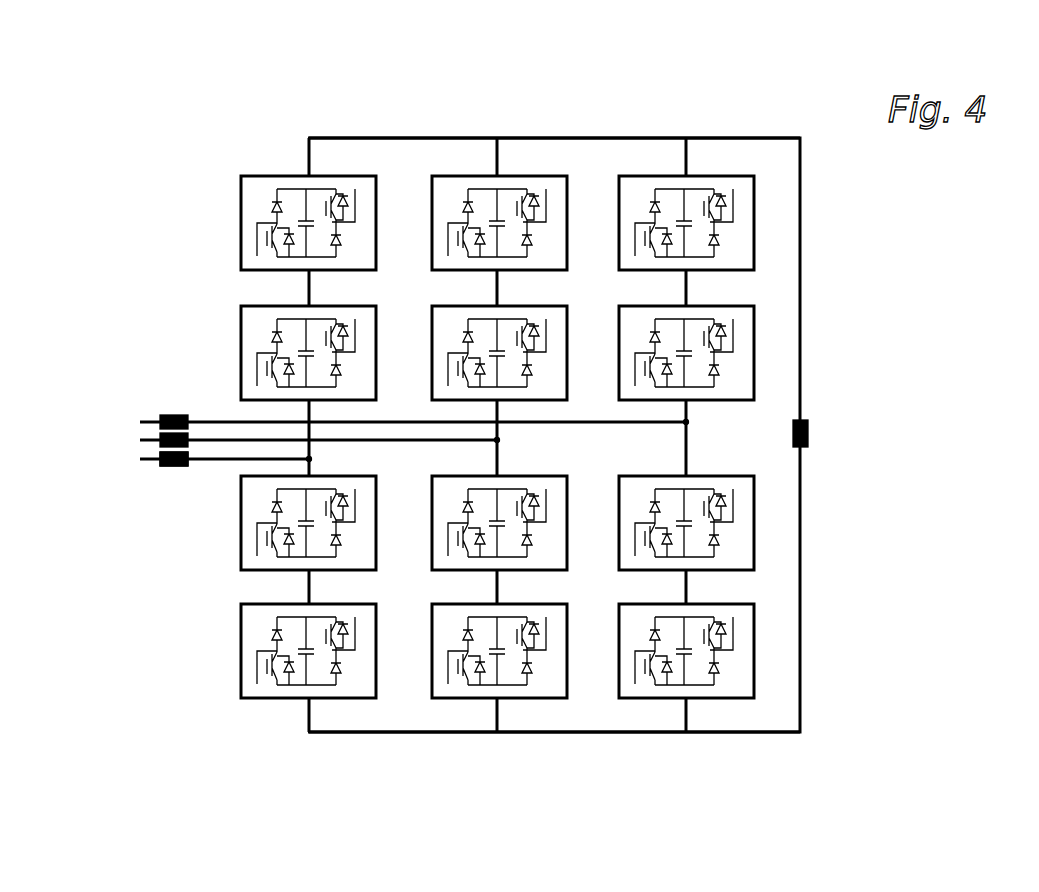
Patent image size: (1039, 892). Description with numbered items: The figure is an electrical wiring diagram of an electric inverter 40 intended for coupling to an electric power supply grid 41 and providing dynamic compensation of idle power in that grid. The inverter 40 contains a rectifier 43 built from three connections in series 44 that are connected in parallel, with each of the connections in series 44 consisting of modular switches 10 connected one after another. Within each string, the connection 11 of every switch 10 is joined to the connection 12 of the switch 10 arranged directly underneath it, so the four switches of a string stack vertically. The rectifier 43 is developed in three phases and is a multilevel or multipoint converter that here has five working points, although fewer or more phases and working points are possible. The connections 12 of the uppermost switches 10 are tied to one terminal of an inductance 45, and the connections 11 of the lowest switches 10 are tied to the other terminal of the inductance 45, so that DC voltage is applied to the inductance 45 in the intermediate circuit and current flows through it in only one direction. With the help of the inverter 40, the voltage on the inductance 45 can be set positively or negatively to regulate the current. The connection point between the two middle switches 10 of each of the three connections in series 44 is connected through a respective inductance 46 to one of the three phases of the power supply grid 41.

The modular switch 10 is at (252, 333).
The connection 11 is at (618, 233).
The connection 12 is at (742, 197).
The electric inverter 40 is at (913, 650).
The electric power supply grid 41 is at (128, 405).
The rectifier 43 is at (808, 745).
The connection in series 44 is at (447, 167).
The inductance 45 is at (810, 432).
The inductance 46 is at (180, 462).